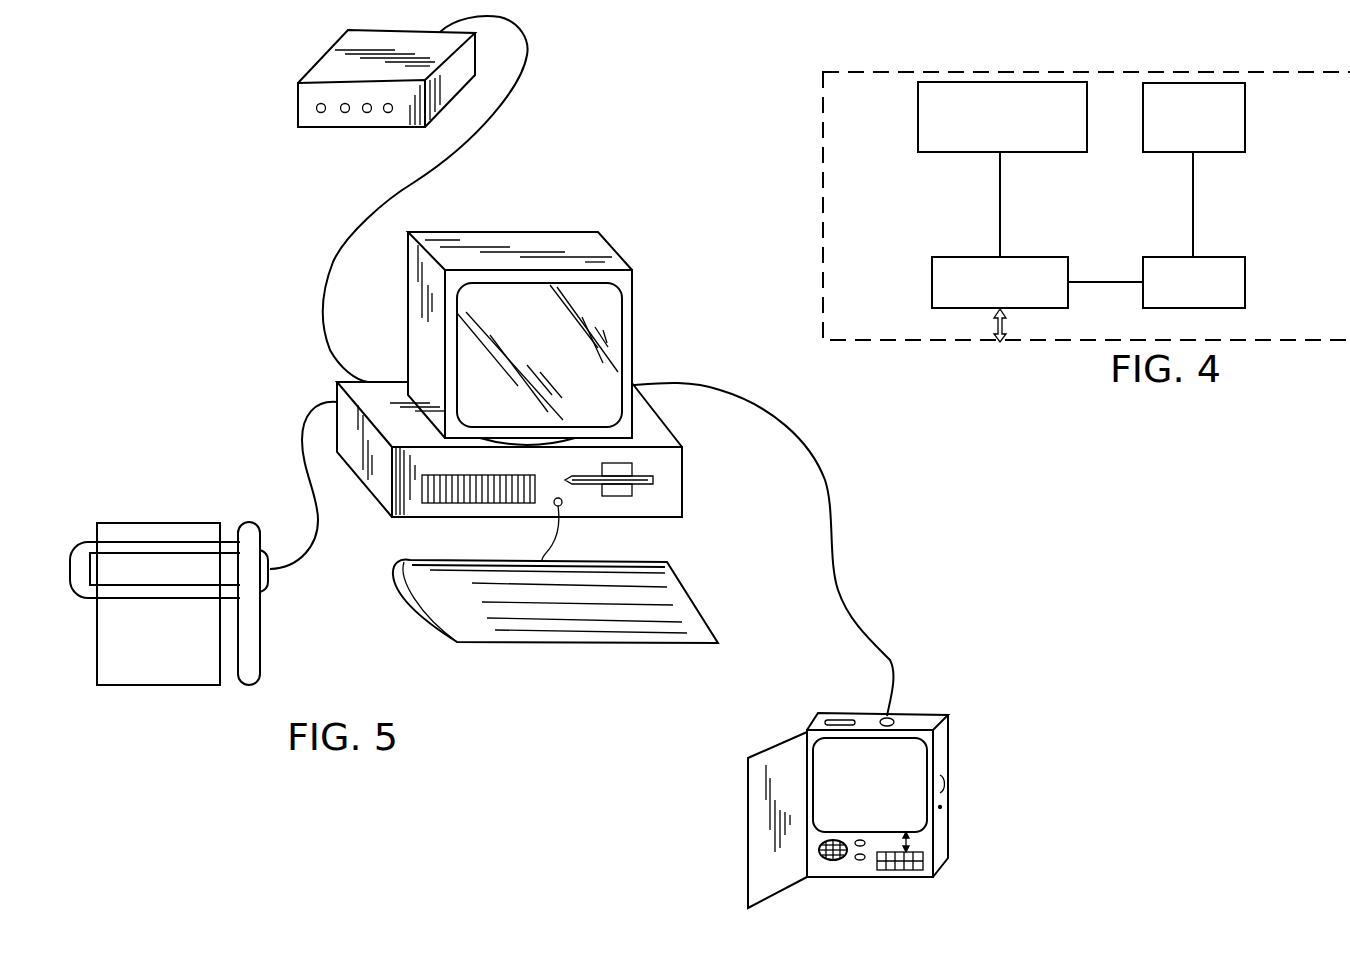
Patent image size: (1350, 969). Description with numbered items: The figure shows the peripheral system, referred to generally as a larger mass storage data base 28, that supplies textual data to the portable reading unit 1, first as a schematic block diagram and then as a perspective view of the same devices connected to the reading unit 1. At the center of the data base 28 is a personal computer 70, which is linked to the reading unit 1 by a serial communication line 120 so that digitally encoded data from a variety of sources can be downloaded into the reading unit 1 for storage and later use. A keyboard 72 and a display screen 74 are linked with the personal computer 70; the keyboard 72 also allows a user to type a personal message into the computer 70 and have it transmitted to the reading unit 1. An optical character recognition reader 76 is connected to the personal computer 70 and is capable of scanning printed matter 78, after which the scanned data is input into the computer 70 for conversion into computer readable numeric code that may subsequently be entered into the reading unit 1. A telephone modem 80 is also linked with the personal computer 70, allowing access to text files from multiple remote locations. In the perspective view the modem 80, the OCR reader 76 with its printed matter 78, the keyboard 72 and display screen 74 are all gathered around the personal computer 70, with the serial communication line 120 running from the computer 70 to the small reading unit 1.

In FIG. 5, the reading unit 1 is at (832, 704).
In FIG. 4, the mass storage data base 28 is at (1218, 60).
In FIG. 5, the mass storage data base 28 is at (303, 346).
In FIG. 4, the personal computer 70 is at (1057, 257).
In FIG. 5, the personal computer 70 is at (509, 375).
In FIG. 5, the keyboard 72 is at (603, 640).
In FIG. 5, the display screen 74 is at (480, 360).
In FIG. 4, the optical character recognition reader 76 is at (1235, 257).
In FIG. 5, the optical character recognition reader 76 is at (265, 592).
In FIG. 4, the printed matter 78 is at (1245, 105).
In FIG. 5, the printed matter 78 is at (157, 685).
In FIG. 4, the telephone modem 80 is at (1087, 111).
In FIG. 5, the telephone modem 80 is at (360, 120).
In FIG. 4, the serial communication line 120 is at (1006, 326).
In FIG. 5, the serial communication line 120 is at (836, 542).